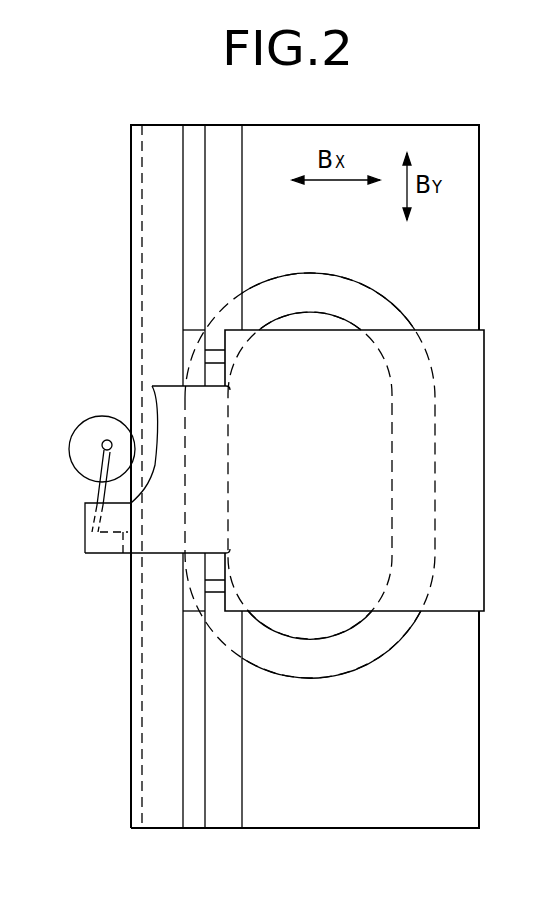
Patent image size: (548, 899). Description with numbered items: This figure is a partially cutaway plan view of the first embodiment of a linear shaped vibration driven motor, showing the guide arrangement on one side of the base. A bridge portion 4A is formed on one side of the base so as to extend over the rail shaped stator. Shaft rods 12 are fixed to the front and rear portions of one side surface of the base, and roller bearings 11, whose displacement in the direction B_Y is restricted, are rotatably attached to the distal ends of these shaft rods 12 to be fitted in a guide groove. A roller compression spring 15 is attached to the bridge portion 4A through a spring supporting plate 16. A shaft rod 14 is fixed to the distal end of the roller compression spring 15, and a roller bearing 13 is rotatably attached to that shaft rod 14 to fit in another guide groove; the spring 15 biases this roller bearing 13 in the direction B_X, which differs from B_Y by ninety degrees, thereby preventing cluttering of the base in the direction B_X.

The bridge portion 4A is at (152, 388).
The roller bearing 11 is at (195, 345).
The shaft rod 12 is at (212, 347).
The roller bearing 13 is at (70, 450).
The shaft rod 14 is at (104, 443).
The roller compression spring 15 is at (97, 493).
The spring supporting plate 16 is at (97, 547).